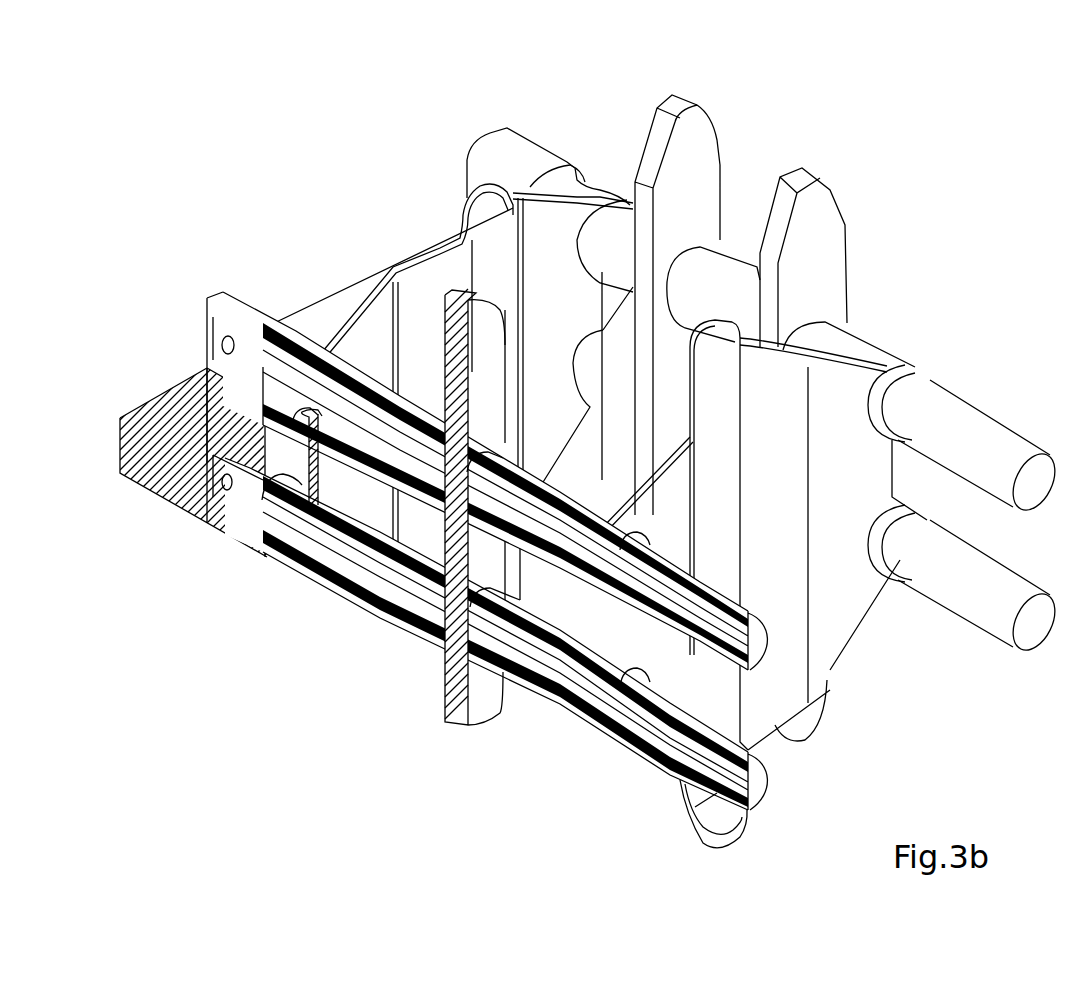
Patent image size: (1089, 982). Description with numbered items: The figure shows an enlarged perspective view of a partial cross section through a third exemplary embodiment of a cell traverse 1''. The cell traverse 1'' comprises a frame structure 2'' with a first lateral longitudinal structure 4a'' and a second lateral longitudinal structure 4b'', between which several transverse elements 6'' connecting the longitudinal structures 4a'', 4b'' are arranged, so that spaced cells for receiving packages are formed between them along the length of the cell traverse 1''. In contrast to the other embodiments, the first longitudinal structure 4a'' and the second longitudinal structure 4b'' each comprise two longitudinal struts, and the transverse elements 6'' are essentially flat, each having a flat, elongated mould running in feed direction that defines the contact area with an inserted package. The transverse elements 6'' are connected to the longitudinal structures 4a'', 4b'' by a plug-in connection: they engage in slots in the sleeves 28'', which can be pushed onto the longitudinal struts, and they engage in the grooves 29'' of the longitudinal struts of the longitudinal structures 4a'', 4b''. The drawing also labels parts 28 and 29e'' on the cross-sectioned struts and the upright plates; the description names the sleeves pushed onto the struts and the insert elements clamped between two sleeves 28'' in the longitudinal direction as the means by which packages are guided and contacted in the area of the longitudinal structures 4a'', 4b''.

The cell traverse 1'' is at (782, 313).
The frame structure 2'' is at (376, 419).
The first lateral longitudinal structure 4a'' is at (673, 836).
The second lateral longitudinal structure 4b'' is at (974, 501).
The transverse element 6'' is at (657, 466).
The busbar 28 is at (487, 484).
The sleeve 28'' is at (490, 632).
The groove 29'' is at (445, 617).
The support plate 29e'' is at (604, 437).